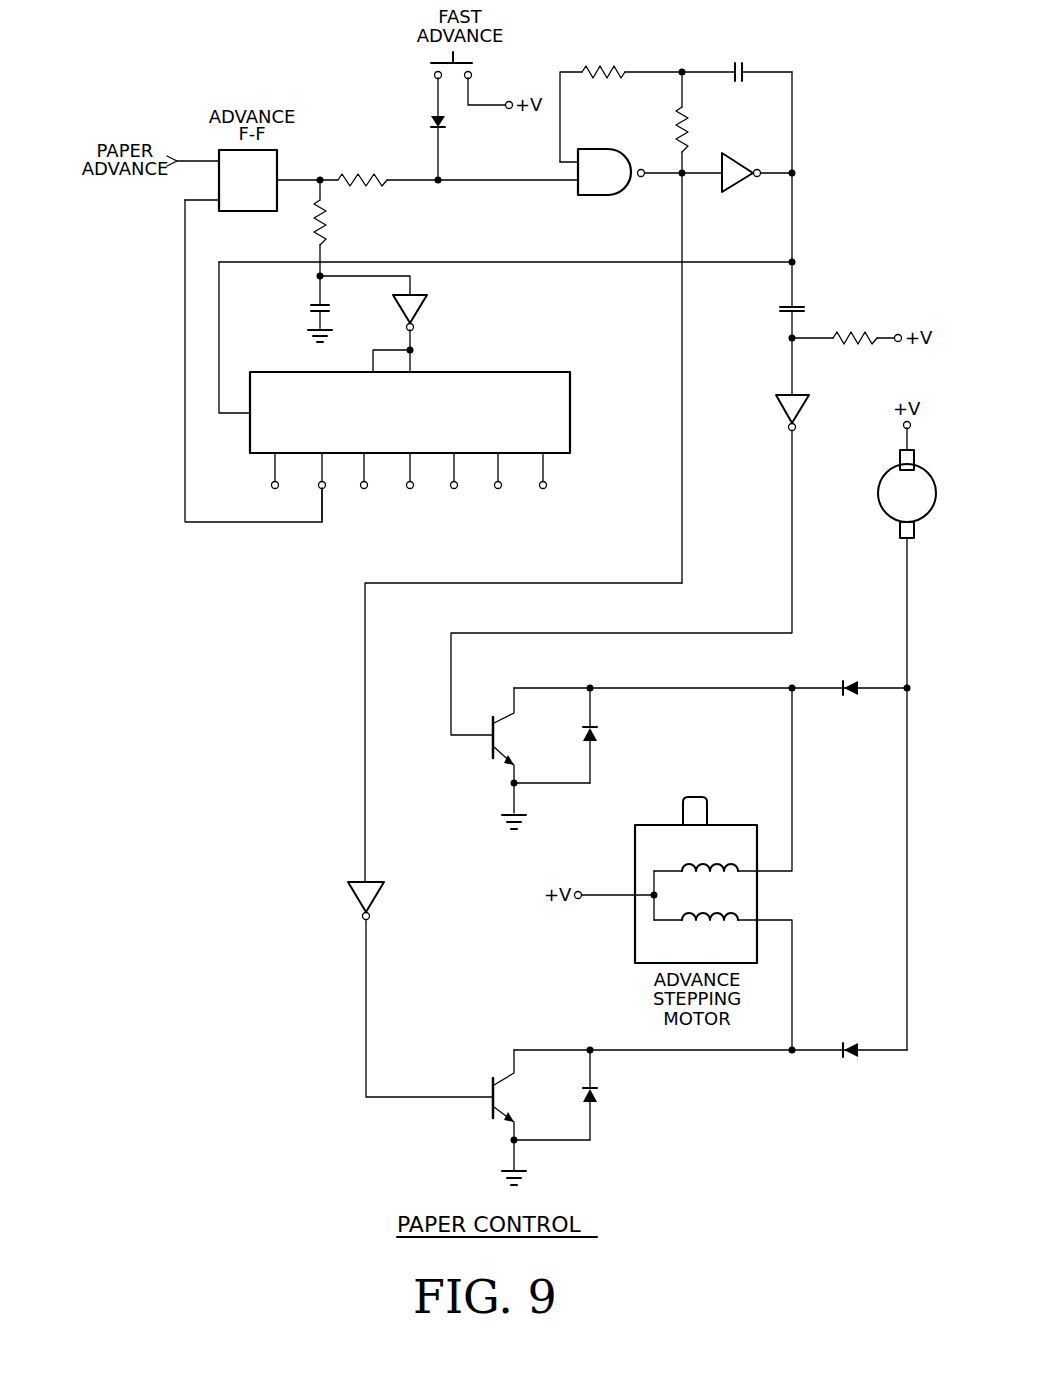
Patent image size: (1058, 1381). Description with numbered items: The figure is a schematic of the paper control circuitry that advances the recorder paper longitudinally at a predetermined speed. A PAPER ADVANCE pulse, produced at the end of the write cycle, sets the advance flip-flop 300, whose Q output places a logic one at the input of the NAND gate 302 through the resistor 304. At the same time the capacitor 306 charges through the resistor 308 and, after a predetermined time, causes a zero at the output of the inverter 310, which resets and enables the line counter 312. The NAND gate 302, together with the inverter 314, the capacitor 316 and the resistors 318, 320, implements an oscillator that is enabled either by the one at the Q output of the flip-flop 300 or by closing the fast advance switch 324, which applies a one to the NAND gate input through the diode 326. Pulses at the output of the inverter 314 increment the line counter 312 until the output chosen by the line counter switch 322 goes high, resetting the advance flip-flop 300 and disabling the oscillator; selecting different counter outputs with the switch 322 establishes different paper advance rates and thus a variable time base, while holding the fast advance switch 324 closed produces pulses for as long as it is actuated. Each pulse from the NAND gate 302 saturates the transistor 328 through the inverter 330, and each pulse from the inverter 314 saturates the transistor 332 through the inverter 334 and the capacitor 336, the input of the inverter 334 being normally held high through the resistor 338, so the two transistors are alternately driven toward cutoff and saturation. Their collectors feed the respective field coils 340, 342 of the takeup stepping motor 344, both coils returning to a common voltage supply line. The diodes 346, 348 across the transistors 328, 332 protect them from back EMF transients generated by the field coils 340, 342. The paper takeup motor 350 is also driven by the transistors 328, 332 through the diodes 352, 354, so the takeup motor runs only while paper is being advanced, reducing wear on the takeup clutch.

The advance flip-flop 300 is at (243, 211).
The NAND gate 302 is at (604, 195).
The resistor 304 is at (367, 196).
The capacitor 306 is at (313, 305).
The resistor 308 is at (326, 230).
The inverter 310 is at (424, 302).
The line counter 312 is at (507, 372).
The inverter 314 is at (733, 188).
The capacitor 316 is at (733, 71).
The resistor 318 is at (609, 70).
The resistor 320 is at (676, 120).
The line counter switch 322 is at (322, 510).
The fast advance switch 324 is at (434, 64).
The diode 326 is at (432, 124).
The transistor 328 is at (497, 1118).
The inverter 330 is at (353, 897).
The transistor 332 is at (492, 750).
The inverter 334 is at (785, 412).
The capacitor 336 is at (783, 306).
The resistor 338 is at (855, 337).
The field coil 340 is at (703, 924).
The field coil 342 is at (706, 864).
The takeup stepping motor 344 is at (645, 826).
The diode 346 is at (600, 1096).
The diode 348 is at (600, 731).
The paper takeup motor 350 is at (878, 494).
The diode 352 is at (849, 1060).
The diode 354 is at (848, 684).